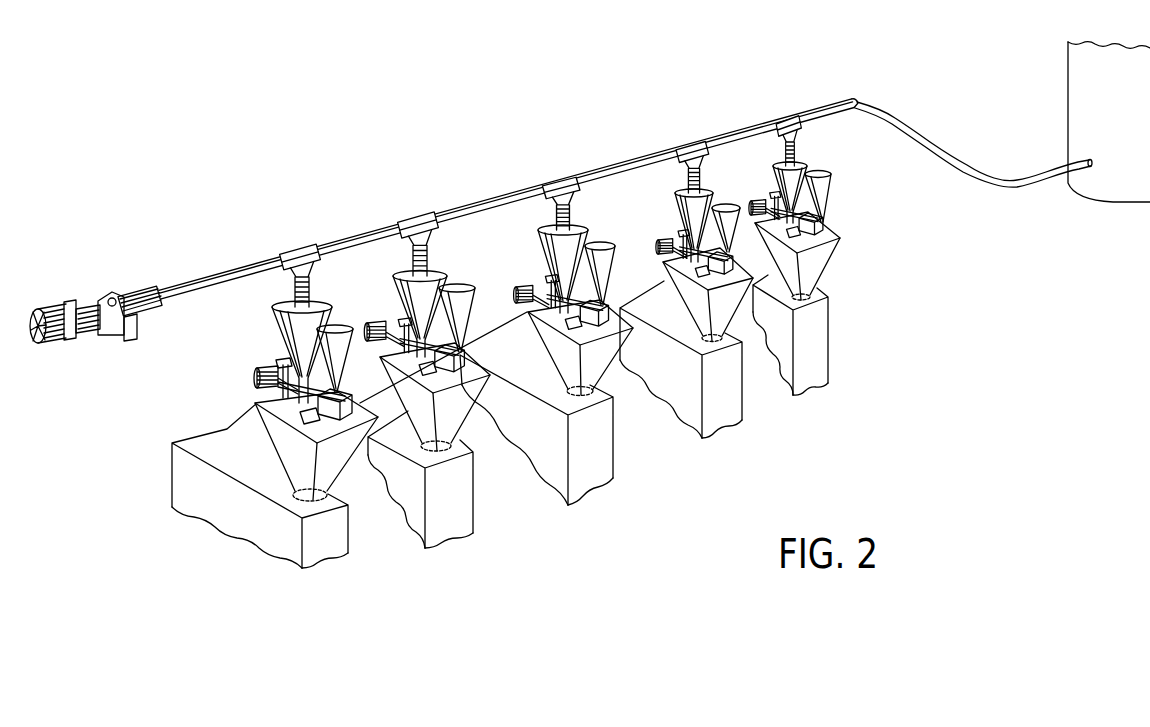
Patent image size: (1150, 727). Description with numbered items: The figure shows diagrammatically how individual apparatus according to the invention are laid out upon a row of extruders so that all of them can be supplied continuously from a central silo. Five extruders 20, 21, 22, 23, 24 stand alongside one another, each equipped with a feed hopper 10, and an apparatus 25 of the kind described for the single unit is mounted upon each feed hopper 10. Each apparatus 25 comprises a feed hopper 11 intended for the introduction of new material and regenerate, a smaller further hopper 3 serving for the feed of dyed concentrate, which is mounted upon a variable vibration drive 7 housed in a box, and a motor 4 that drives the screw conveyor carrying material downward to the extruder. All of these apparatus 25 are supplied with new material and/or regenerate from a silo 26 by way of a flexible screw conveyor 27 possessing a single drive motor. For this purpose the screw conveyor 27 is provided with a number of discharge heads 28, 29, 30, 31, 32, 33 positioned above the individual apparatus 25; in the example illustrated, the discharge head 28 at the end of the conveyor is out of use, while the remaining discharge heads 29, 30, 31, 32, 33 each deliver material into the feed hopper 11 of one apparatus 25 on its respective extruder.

The hopper 3 is at (832, 183).
The motor 4 is at (255, 378).
The variable vibration drive 7 is at (832, 227).
The feed hopper 10 is at (270, 420).
The feed hopper 11 is at (803, 163).
The extruder 20 is at (338, 552).
The extruder 21 is at (464, 528).
The extruder 22 is at (603, 478).
The extruder 23 is at (735, 418).
The extruder 24 is at (822, 382).
The apparatus 25 is at (260, 334).
The silo 26 is at (1110, 201).
The flexible screw conveyor 27 is at (857, 102).
The discharge head 28 is at (52, 308).
The discharge head 29 is at (303, 248).
The discharge head 30 is at (418, 213).
The discharge head 31 is at (557, 180).
The discharge head 32 is at (693, 143).
The discharge head 33 is at (785, 118).